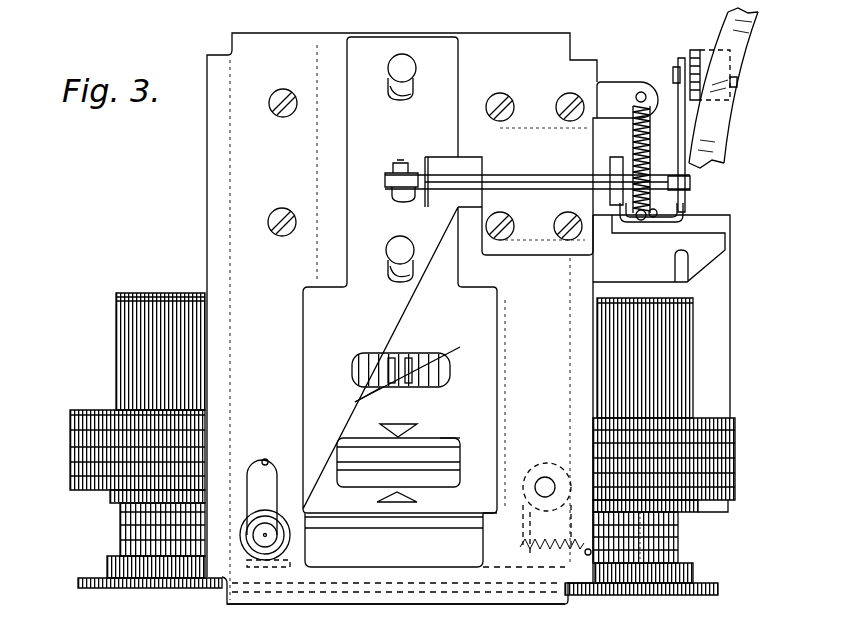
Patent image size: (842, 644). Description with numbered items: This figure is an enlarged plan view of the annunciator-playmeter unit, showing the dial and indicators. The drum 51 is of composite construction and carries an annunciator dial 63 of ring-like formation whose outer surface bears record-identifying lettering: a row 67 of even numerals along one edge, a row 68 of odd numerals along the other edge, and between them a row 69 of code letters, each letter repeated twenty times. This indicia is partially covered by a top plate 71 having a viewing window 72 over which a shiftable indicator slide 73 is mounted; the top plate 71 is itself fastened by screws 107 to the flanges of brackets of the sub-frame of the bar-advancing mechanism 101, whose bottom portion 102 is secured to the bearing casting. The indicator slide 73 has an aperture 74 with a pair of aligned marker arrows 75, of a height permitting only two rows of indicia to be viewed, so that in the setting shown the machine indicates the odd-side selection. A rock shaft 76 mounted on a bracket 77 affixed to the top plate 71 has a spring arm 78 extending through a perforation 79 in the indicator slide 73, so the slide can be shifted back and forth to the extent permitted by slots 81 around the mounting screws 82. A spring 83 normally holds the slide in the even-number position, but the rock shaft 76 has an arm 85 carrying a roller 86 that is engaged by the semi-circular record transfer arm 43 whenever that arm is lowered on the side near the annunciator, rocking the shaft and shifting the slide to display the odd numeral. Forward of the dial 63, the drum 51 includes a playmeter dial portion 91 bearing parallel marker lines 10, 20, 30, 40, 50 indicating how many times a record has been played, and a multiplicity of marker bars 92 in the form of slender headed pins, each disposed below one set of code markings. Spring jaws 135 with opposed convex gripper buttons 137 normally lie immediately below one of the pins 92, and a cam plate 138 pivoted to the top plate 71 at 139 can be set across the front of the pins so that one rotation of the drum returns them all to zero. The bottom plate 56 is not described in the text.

The marker bar 10 is at (678, 520).
The marker bar 20 is at (678, 535).
The marker bar 30 is at (678, 545).
The marker bar 40 is at (678, 552).
The marker bar 50 is at (678, 565).
The record transfer arm 43 is at (713, 133).
The drum 51 is at (72, 570).
The bottom plate 56 is at (668, 597).
The annunciator dial 63 is at (62, 413).
The row of even numerals 67 is at (738, 430).
The row of odd numerals 68 is at (458, 482).
The row of code letters 69 is at (337, 445).
The top plate 71 is at (535, 388).
The viewing window 72 is at (478, 551).
The indicator slide 73 is at (378, 327).
The aperture 74 is at (450, 442).
The marker arrows 75 is at (405, 424).
The rock shaft 76 is at (553, 180).
The bracket 77 is at (527, 90).
The spring arm 78 is at (397, 198).
The perforation 79 is at (388, 193).
The slots 81 is at (395, 94).
The mounting screws 82 is at (400, 60).
The spring 83 is at (635, 133).
The arm 85 is at (680, 90).
The roller 86 is at (698, 53).
The playmeter dial portion 91 is at (118, 505).
The marker bars 92 is at (182, 292).
The bar-advancing mechanism 101 is at (291, 537).
The bottom portion 102 is at (265, 459).
The screws 107 is at (279, 90).
The spring jaws 135 is at (420, 367).
The gripper buttons 137 is at (346, 404).
The cam plate 138 is at (420, 564).
The pivot 139 is at (545, 477).